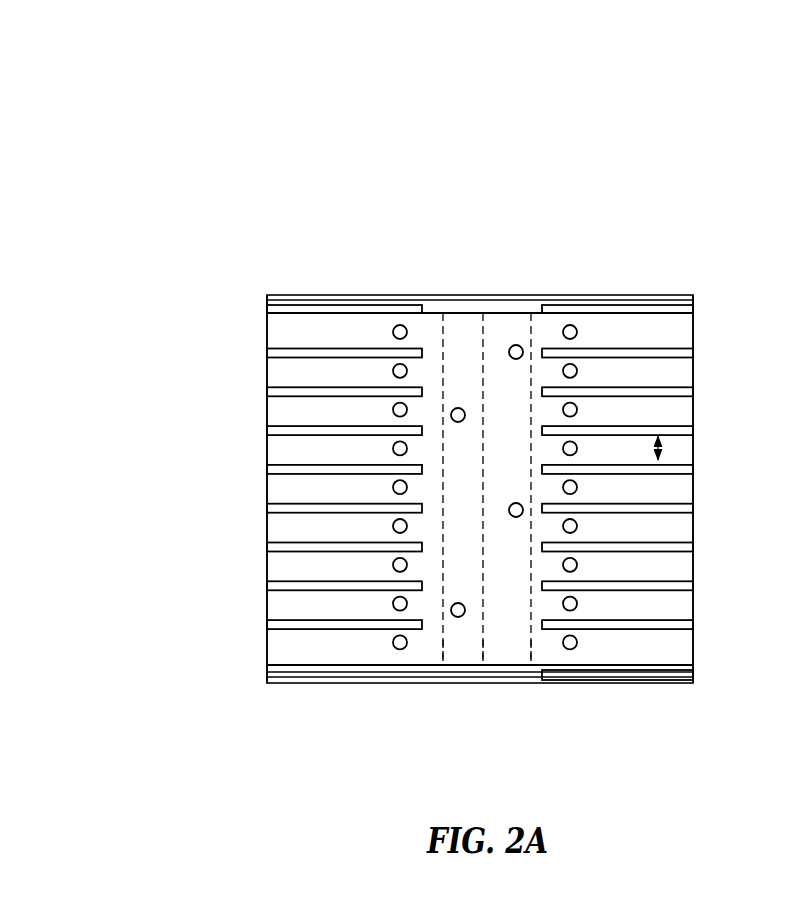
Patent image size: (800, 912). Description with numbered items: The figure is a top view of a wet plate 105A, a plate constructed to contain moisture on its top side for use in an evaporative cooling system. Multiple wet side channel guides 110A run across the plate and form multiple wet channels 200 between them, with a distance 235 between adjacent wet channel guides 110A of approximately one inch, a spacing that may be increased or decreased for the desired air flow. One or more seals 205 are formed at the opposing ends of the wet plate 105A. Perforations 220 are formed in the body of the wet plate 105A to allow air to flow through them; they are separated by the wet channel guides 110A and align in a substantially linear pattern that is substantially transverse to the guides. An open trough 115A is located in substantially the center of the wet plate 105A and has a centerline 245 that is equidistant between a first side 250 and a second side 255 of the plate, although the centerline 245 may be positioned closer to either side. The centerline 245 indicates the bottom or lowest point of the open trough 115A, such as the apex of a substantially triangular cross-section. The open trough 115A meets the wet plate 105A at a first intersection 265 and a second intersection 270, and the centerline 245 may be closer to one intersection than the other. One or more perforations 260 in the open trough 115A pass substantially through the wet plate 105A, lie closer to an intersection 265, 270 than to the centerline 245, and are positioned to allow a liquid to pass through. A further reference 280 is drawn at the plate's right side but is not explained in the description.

The wet plate 105A is at (353, 148).
The open trough 115A is at (465, 318).
The perforations 260 is at (522, 347).
The seals 205 is at (660, 293).
The wet channels 200 is at (283, 373).
The distance 235 is at (675, 443).
The wet side channel guides 110A is at (270, 502).
The second side 255 is at (710, 550).
The first side 250 is at (192, 607).
The right contact pads 280 is at (799, 608).
The perforations 220 is at (398, 650).
The first intersection 265 is at (436, 647).
The centerline 245 is at (487, 650).
The second intersection 270 is at (537, 640).